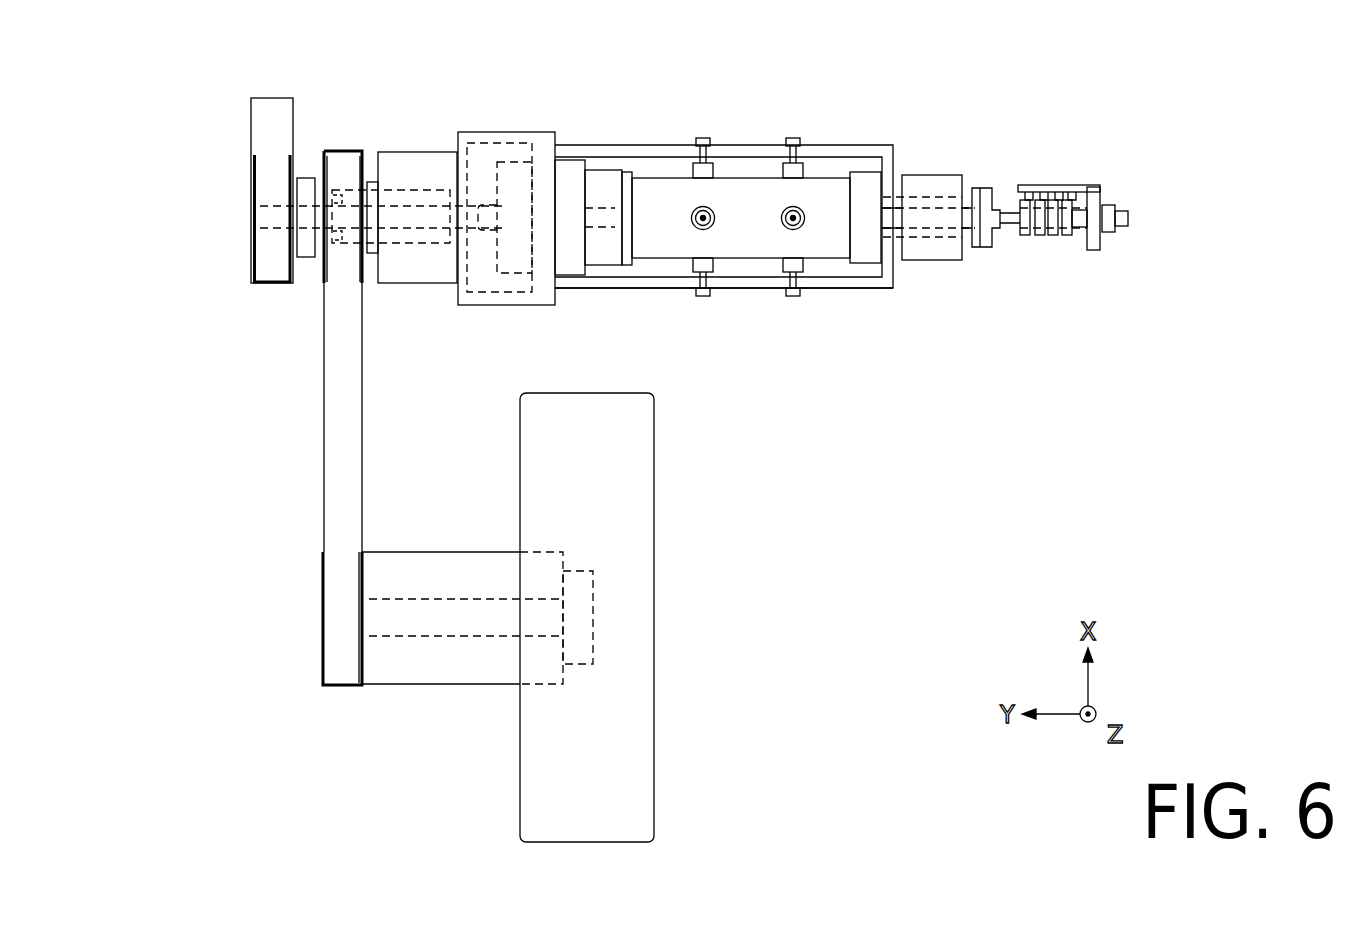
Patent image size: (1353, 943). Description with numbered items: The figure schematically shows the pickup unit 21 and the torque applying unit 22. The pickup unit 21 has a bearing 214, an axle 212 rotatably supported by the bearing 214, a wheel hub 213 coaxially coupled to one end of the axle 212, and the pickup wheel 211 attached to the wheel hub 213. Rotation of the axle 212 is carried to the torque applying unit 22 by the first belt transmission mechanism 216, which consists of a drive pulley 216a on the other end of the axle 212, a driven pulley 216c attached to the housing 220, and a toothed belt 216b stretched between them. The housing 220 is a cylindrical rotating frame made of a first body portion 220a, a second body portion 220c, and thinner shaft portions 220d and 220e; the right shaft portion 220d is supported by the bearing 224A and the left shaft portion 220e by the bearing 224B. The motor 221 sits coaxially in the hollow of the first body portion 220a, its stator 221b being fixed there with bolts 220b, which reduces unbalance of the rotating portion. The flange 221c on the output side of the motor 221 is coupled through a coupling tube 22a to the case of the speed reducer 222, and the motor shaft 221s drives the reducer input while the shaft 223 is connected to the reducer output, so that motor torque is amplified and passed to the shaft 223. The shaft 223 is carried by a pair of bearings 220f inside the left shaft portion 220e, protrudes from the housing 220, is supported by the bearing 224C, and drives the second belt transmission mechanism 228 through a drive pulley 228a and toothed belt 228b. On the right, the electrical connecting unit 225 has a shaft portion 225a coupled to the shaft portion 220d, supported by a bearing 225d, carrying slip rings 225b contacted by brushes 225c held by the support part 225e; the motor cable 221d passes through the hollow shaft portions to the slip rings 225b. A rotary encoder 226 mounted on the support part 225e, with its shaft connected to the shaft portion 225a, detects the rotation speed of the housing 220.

The pickup unit 21 is at (392, 704).
The torque applying unit 22 is at (1058, 241).
The coupling tube 22a is at (593, 168).
The pickup wheel 211 is at (654, 775).
The axle 212 is at (500, 636).
The wheel hub 213 is at (593, 617).
The bearing 214 is at (428, 552).
The first belt transmission mechanism 216 is at (254, 418).
The drive pulley 216a is at (290, 583).
The toothed belt 216b is at (324, 452).
The driven pulley 216c is at (323, 272).
The housing 220 is at (669, 220).
The first body portion 220a is at (765, 288).
The bolts 220b is at (700, 296).
The second body portion 220c is at (520, 305).
The shaft portion 220d is at (940, 280).
The shaft portion 220e is at (412, 245).
The bearings 220f is at (336, 245).
The motor 221 is at (737, 146).
The stator 221b is at (757, 177).
The flange 221c is at (633, 172).
The cable 221d is at (891, 168).
The shaft 221s is at (598, 207).
The speed reducer 222 is at (520, 160).
The shaft 223 is at (480, 205).
The bearing 224A is at (935, 175).
The bearing 224B is at (415, 152).
The bearing 224C is at (305, 178).
The electrical connecting unit 225 is at (1107, 269).
The shaft portion 225a is at (1005, 203).
The slip rings 225b is at (1027, 237).
The brushes 225c is at (1067, 237).
The bearing 225d is at (1100, 185).
The support part 225e is at (1097, 183).
The rotary encoder 226 is at (1128, 212).
The second belt transmission mechanism 228 is at (180, 190).
The drive pulley 228a is at (253, 168).
The toothed belt 228b is at (253, 118).